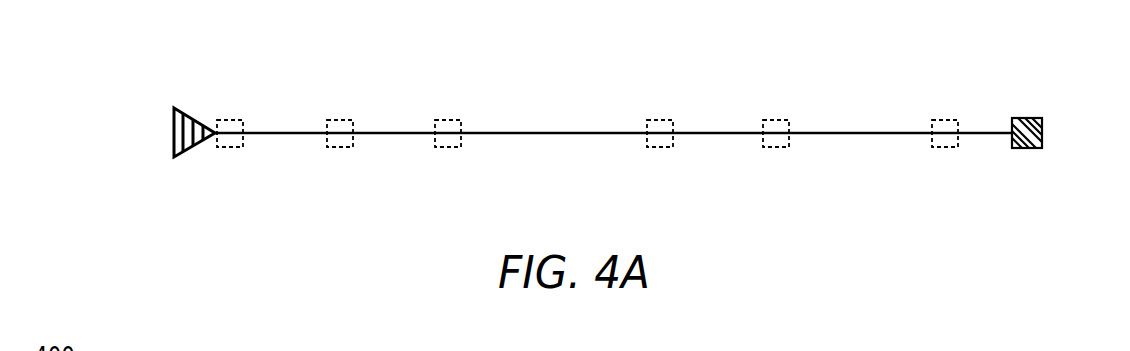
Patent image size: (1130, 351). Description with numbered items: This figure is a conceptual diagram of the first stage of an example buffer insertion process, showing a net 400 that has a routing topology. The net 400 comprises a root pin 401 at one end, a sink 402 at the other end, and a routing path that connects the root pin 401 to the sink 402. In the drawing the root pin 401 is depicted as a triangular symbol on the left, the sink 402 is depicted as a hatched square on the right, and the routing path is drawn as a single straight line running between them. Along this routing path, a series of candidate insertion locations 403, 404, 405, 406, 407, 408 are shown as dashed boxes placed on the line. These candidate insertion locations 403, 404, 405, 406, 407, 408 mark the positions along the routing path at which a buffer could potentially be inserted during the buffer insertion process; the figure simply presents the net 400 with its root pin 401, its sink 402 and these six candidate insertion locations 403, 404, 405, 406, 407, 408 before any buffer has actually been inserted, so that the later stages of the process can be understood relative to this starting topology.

The net 400 is at (116, 36).
The root pin 401 is at (172, 132).
The sink 402 is at (1042, 121).
The candidate insertion location 403 is at (228, 148).
The candidate insertion location 404 is at (336, 148).
The candidate insertion location 405 is at (446, 148).
The candidate insertion location 406 is at (658, 148).
The candidate insertion location 407 is at (773, 148).
The candidate insertion location 408 is at (942, 148).